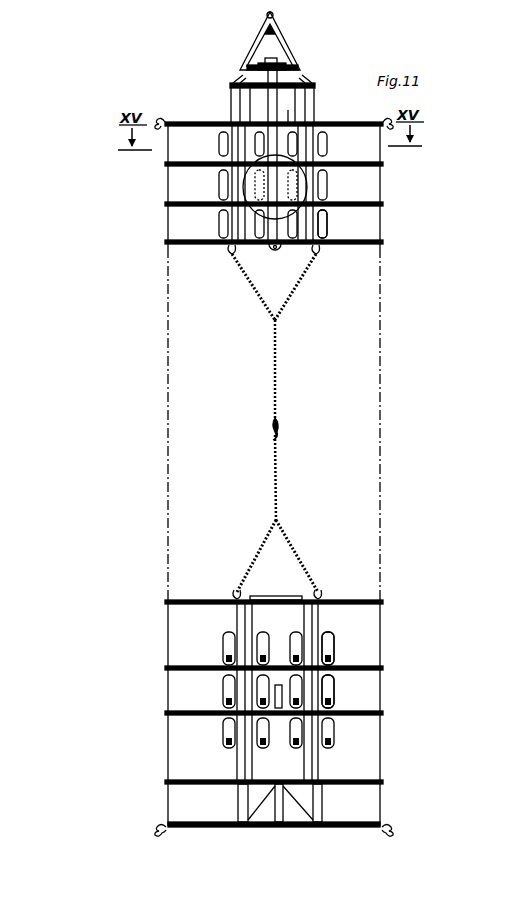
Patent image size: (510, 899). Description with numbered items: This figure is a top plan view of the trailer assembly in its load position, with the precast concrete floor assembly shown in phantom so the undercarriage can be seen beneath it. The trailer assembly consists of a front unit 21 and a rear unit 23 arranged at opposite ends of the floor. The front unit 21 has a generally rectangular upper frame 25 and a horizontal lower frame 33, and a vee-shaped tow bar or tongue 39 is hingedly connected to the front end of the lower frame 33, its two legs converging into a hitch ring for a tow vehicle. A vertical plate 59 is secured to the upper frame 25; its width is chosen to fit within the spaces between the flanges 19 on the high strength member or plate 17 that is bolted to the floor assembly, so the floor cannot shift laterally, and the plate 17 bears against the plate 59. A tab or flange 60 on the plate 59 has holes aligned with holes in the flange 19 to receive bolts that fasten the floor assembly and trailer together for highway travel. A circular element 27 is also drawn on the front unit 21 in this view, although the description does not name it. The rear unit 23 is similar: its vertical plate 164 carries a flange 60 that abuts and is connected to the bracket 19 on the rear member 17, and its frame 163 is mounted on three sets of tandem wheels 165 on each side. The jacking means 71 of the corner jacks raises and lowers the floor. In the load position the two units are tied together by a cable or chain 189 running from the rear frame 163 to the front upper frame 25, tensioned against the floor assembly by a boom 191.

The high strength member or plate 17 is at (220, 828).
The flange 19 is at (324, 828).
The front unit 21 is at (208, 112).
The rear unit 23 is at (440, 577).
The upper frame 25 is at (330, 215).
The drum 27 is at (295, 160).
The lower frame 33 is at (232, 97).
The tow bar or tongue 39 is at (257, 53).
The vertical plate 59 is at (289, 124).
The tab or flange 60 is at (318, 828).
The jacking means 71 is at (331, 598).
The frame 163 is at (330, 617).
The vertical plate 164 is at (293, 818).
The tandem wheels 165 is at (330, 688).
The cable or chain 189 is at (290, 540).
The boom 191 is at (278, 418).